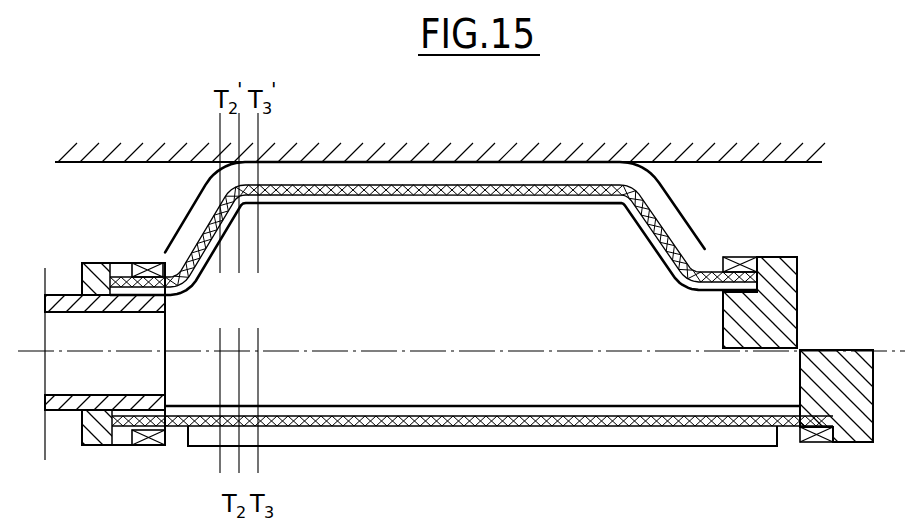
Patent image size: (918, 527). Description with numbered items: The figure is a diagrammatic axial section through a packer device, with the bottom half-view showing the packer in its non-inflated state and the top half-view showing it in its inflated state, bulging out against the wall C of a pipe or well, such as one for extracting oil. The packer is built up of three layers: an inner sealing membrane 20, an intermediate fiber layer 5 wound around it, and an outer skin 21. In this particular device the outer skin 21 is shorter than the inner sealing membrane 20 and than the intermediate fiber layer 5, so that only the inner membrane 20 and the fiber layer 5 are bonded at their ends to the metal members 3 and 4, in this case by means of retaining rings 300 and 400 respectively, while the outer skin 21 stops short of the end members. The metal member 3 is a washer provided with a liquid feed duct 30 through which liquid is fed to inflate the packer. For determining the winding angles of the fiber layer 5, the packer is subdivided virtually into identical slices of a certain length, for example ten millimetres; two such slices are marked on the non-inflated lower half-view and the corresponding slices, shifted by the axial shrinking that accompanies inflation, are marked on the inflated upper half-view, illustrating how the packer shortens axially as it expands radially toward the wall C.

The metal member 3 is at (102, 254).
The retaining ring 300 is at (146, 264).
The liquid feed duct 30 is at (62, 405).
The metal member 4 is at (806, 318).
The retaining ring 400 is at (748, 256).
The intermediate fiber layer 5 is at (571, 190).
The inner sealing membrane 20 is at (586, 203).
The outer skin 21 is at (482, 178).
The wall C is at (773, 163).